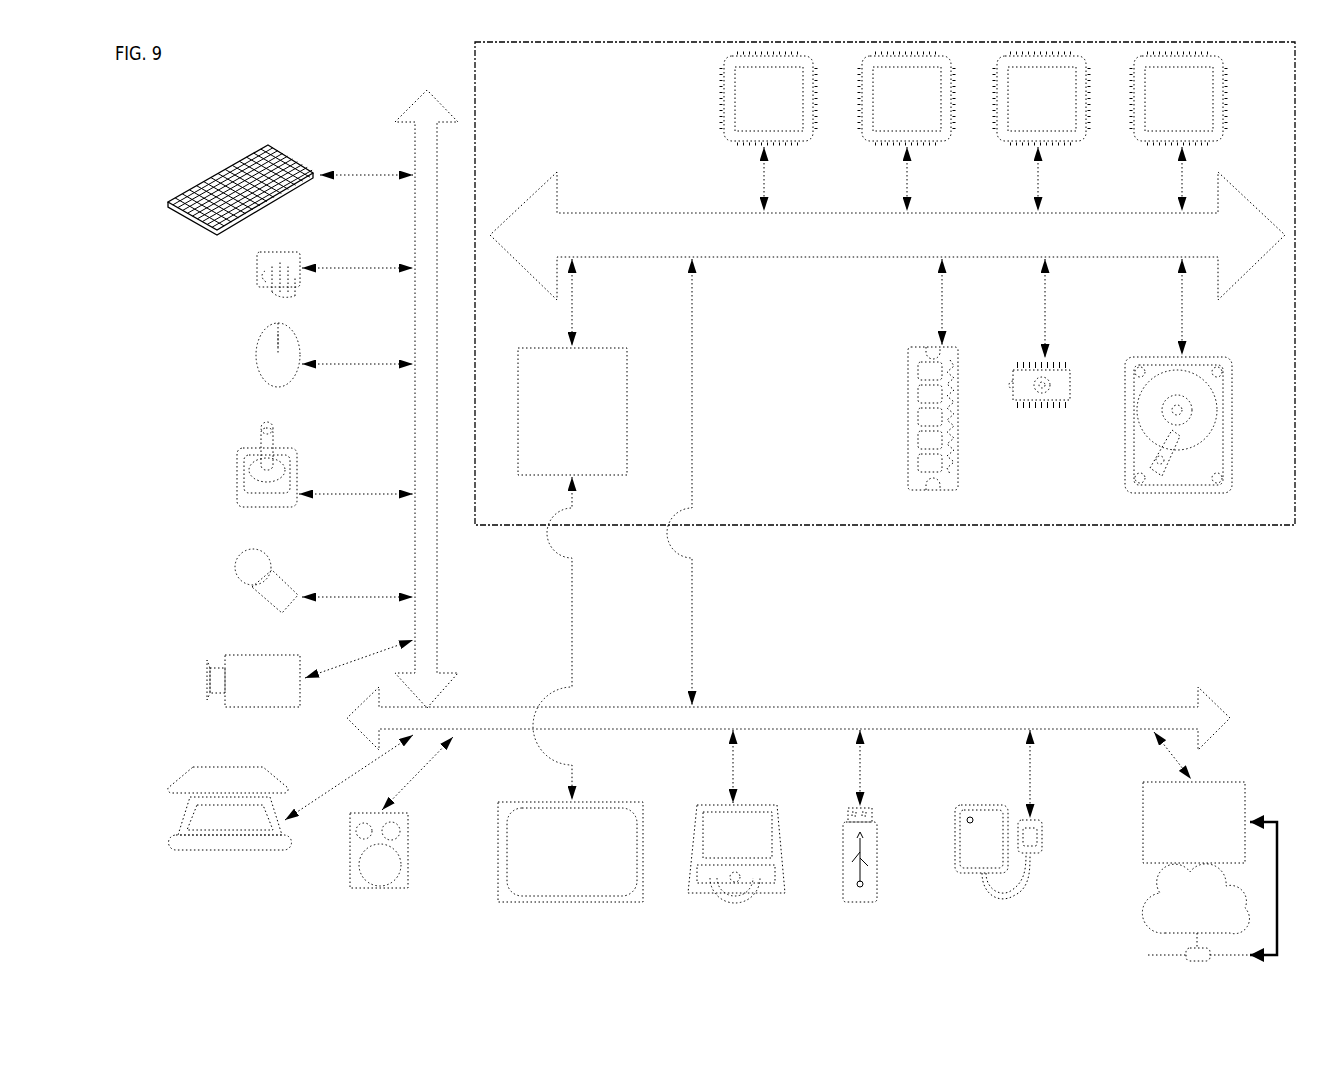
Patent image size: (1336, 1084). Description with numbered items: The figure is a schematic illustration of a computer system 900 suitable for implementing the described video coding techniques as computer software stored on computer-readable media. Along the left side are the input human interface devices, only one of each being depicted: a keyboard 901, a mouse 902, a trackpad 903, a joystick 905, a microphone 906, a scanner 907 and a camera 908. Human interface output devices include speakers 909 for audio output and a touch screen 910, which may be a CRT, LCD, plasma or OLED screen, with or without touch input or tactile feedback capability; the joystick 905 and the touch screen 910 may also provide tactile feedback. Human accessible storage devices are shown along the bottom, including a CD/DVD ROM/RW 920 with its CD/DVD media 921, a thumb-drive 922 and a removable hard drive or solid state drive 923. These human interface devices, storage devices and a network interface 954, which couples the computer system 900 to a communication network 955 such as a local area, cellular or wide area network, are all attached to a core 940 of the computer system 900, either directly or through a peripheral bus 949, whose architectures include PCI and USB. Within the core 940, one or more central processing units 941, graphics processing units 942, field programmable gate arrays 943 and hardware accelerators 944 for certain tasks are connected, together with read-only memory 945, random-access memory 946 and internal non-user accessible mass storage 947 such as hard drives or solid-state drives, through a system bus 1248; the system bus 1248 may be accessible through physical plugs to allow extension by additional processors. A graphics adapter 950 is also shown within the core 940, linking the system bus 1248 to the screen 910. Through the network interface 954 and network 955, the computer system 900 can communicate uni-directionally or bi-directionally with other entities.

The computer system 900 is at (701, 503).
The keyboard 901 is at (172, 212).
The mouse 902 is at (256, 362).
The trackpad 903 is at (255, 282).
The joystick 905 is at (237, 490).
The microphone 906 is at (237, 570).
The scanner 907 is at (175, 822).
The camera 908 is at (210, 690).
The speakers 909 is at (378, 890).
The touch screen 910 is at (570, 903).
The CD/DVD ROM/RW 920 is at (755, 844).
The CD/DVD media 921 is at (712, 897).
The thumb-drive 922 is at (860, 903).
The removable hard drive or solid state drive 923 is at (960, 880).
The core 940 is at (877, 525).
The central processing unit 941 is at (768, 132).
The graphics processing unit 942 is at (906, 132).
The field programmable gate array 943 is at (1041, 132).
The hardware accelerator 944 is at (1178, 132).
The read-only memory 945 is at (1032, 410).
The random-access memory 946 is at (908, 420).
The internal mass storage 947 is at (1147, 360).
The peripheral bus 949 is at (415, 124).
The graphics adapter 950 is at (572, 529).
The network interface 954 is at (1210, 843).
The network 955 is at (1148, 920).
The system bus 1248 is at (887, 236).